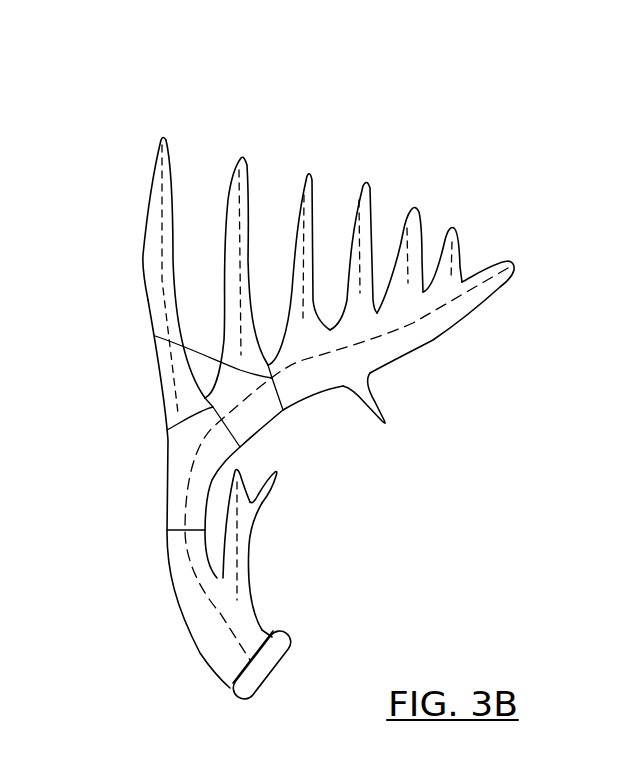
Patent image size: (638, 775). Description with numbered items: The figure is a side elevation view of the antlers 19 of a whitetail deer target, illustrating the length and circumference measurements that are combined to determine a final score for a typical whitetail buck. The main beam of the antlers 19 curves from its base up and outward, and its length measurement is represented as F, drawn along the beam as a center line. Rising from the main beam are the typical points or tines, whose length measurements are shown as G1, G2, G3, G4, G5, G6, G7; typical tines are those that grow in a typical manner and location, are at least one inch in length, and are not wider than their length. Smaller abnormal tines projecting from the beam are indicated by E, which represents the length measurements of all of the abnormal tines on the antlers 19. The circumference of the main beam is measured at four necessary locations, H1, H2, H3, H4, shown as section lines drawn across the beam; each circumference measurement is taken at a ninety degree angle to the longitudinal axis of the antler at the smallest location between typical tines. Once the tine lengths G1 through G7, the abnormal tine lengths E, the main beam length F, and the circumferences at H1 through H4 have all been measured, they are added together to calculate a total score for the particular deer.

The antlers 19 is at (110, 58).
The first typical tine length measurement G1 is at (250, 570).
The second typical tine length measurement G2 is at (164, 137).
The third typical tine length measurement G3 is at (243, 157).
The fourth typical tine length measurement G4 is at (310, 172).
The fifth typical tine length measurement G5 is at (366, 182).
The sixth typical tine length measurement G6 is at (415, 207).
The seventh typical tine length measurement G7 is at (453, 228).
The first main beam circumference location H1 is at (238, 667).
The second main beam circumference location H2 is at (180, 531).
The third main beam circumference location H3 is at (167, 430).
The fourth main beam circumference location H4 is at (155, 336).
The abnormal tine length measurement E is at (385, 424).
The main beam length measurement F is at (417, 323).